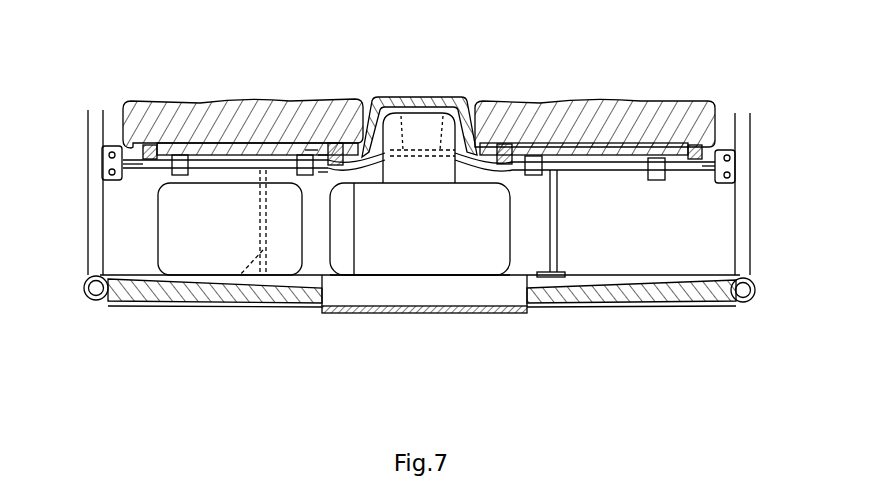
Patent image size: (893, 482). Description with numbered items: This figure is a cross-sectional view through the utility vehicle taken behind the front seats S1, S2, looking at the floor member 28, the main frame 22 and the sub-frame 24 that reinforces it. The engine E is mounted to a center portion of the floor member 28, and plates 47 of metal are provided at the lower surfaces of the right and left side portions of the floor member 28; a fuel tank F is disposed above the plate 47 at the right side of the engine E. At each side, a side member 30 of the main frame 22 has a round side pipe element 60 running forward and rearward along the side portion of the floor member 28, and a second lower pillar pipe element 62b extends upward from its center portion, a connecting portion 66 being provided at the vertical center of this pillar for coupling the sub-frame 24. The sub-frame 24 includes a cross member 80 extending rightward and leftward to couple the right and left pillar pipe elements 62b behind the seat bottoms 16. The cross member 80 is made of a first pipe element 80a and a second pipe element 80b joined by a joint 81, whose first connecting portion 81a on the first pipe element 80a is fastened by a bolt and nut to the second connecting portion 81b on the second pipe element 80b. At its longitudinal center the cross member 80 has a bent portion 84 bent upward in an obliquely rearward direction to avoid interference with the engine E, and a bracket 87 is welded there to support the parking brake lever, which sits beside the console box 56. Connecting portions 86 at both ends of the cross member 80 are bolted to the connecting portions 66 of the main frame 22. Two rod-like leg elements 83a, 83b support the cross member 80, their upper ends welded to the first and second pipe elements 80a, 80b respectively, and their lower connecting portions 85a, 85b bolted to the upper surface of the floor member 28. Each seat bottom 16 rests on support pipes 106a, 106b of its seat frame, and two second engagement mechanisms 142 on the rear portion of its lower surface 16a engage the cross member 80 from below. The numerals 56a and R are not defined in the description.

The seat bottom 16 is at (176, 100).
The lower surface 16a is at (233, 156).
The main frame 22 is at (754, 293).
The sub-frame 24 is at (590, 171).
The floor member 28 is at (690, 306).
The side member 30 is at (88, 233).
The plate 47 is at (187, 284).
The console box 56 is at (419, 97).
The case bottom wall 56a is at (420, 233).
The side pipe element 60 is at (90, 299).
The second lower pillar pipe element 62b is at (93, 222).
The connecting portion 66 is at (103, 166).
The cross member 80 is at (563, 171).
The first pipe element 80a is at (700, 172).
The second pipe element 80b is at (143, 166).
The joint 81 is at (325, 165).
The first connecting portion 81a is at (325, 170).
The second connecting portion 81b is at (320, 148).
The leg element 83a is at (558, 235).
The leg element 83b is at (250, 300).
The bent portion 84 is at (398, 97).
The connecting portion 85a is at (556, 312).
The connecting portion 85b is at (262, 312).
The connecting portion 86 is at (110, 148).
The bracket 87 is at (441, 150).
The support pipe 106a is at (149, 146).
The support pipe 106b is at (338, 144).
The second engagement mechanism 142 is at (178, 178).
The seat S1 is at (590, 100).
The seat S2 is at (238, 98).
The fuel tank F is at (195, 250).
The rear direction R is at (388, 240).
The engine E is at (461, 245).